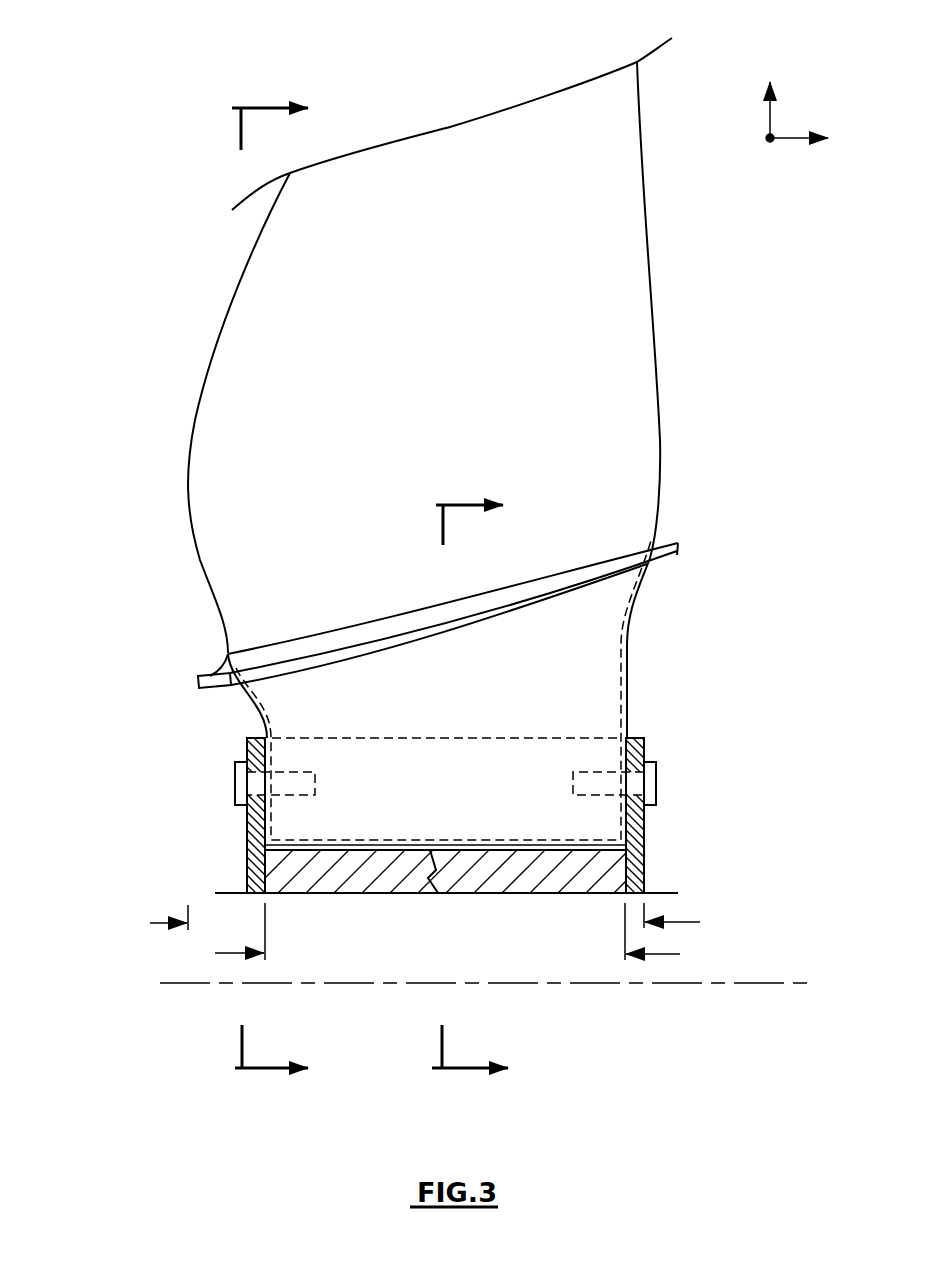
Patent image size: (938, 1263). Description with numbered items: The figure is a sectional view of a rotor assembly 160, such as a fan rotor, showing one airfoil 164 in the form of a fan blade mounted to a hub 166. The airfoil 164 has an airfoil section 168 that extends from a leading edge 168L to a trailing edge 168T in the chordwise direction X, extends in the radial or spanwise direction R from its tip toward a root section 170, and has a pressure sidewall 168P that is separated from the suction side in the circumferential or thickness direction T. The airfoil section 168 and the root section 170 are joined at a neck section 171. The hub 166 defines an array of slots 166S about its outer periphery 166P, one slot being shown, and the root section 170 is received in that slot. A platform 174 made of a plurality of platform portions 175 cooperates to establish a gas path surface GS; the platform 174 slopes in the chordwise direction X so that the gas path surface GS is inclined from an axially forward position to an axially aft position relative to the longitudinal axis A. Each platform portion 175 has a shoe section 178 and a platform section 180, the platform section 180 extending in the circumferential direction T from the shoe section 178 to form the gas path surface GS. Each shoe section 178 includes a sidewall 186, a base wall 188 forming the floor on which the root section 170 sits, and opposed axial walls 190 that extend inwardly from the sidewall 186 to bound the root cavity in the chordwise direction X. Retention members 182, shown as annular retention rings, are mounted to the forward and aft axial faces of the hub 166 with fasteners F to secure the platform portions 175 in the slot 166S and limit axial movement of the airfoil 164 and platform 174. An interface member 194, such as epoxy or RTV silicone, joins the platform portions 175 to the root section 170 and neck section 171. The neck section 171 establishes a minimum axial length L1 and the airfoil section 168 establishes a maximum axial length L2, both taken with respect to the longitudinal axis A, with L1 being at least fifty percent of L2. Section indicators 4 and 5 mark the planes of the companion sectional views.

The rotor assembly 160 is at (395, 373).
The airfoil 164 is at (406, 122).
The airfoil section 168 is at (421, 400).
The leading edge 168L is at (188, 462).
The pressure sidewall 168P is at (690, 400).
The trailing edge 168T is at (660, 414).
The interface member 194 is at (438, 583).
The gas path surface GS is at (507, 605).
The platform 174 is at (513, 583).
The platform portions 175 is at (438, 583).
The neck section 171 is at (633, 620).
The sidewall 186 is at (483, 688).
The shoe section 178 is at (190, 699).
The platform section 180 is at (205, 680).
The hub 166 is at (526, 726).
The outer periphery 166P is at (598, 738).
The slot 166S is at (524, 842).
The root section 170 is at (293, 810).
The retention member 182 is at (441, 812).
The axial wall 190 is at (247, 835).
The base wall 188 is at (446, 892).
The fastener F is at (235, 782).
The minimum axial length L1 is at (220, 953).
The maximum axial length L2 is at (155, 923).
The longitudinal axis A is at (783, 983).
The radial direction R is at (792, 126).
The chordwise direction X is at (792, 141).
The circumferential direction T is at (770, 140).
The section line 4- 4 is at (261, 590).
The section line 5- 5 is at (461, 788).